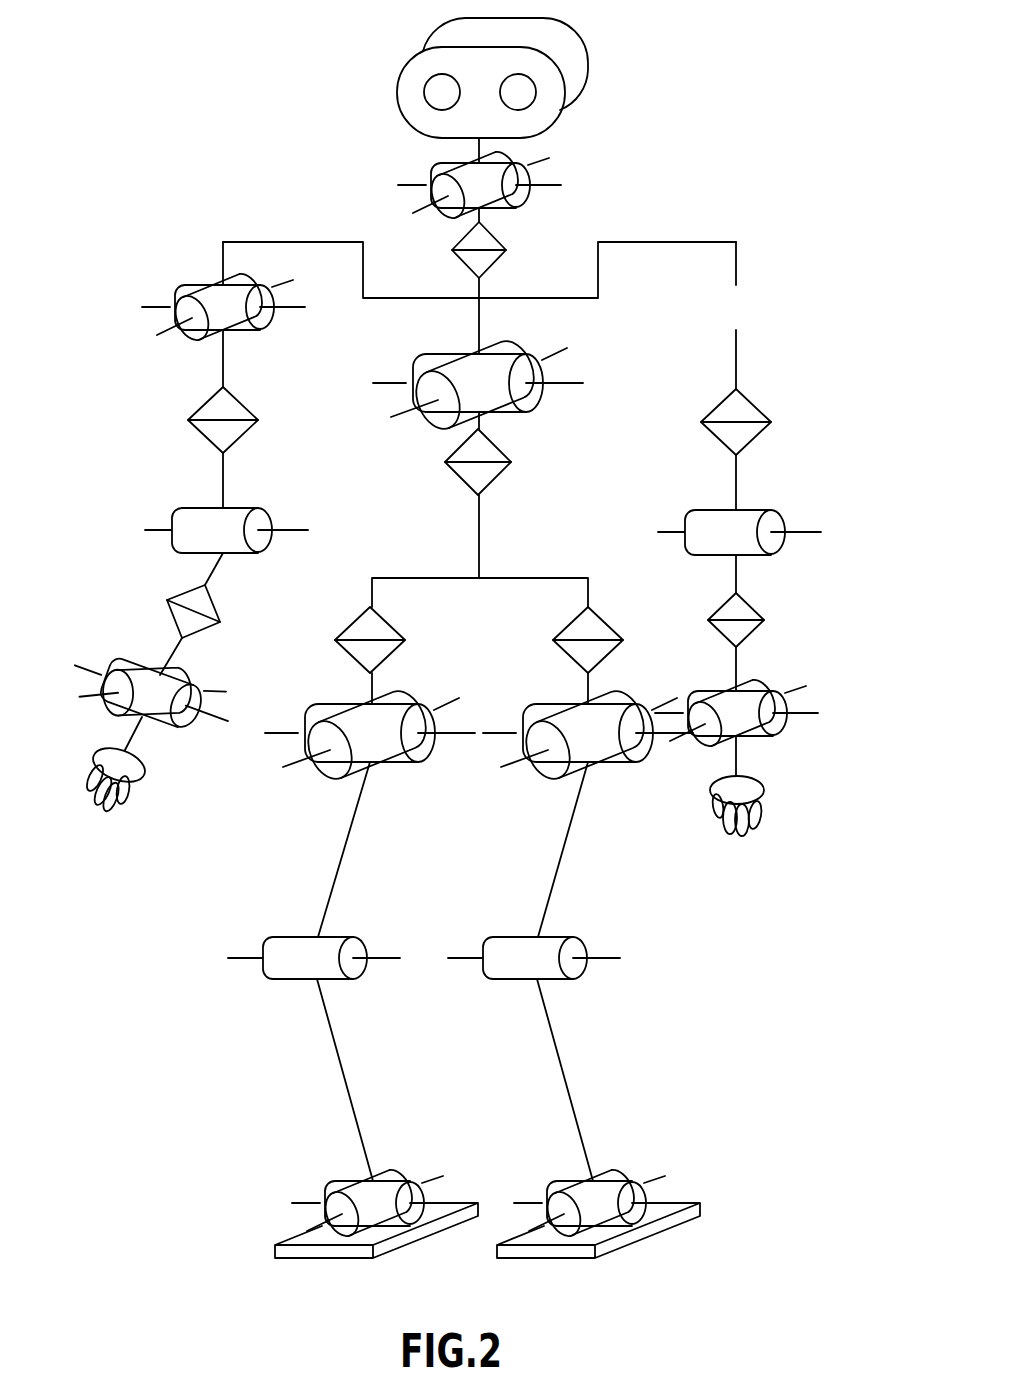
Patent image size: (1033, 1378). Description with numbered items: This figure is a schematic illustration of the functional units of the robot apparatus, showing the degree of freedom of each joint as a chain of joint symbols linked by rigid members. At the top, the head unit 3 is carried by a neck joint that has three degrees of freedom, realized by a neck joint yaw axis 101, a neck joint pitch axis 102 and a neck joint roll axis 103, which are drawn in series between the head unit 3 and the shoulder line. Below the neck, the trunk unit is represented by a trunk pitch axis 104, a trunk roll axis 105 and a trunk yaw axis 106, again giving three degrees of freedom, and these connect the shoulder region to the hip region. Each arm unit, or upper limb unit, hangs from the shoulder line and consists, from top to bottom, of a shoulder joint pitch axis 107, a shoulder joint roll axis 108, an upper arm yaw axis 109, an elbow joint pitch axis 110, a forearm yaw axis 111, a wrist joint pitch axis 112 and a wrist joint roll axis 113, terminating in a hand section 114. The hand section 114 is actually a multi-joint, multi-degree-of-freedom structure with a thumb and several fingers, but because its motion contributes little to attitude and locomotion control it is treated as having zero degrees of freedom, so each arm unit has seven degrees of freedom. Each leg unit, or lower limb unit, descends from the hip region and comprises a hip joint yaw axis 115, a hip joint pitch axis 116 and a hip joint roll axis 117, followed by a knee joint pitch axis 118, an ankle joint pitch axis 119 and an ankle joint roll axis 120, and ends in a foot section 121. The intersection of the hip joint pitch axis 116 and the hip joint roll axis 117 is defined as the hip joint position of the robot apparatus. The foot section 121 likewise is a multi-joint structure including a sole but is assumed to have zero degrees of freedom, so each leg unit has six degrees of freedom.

The head unit 3 is at (545, 38).
The neck joint yaw axis 101 is at (507, 250).
The neck joint pitch axis 102 is at (525, 177).
The neck joint roll axis 103 is at (505, 155).
The trunk pitch axis 104 is at (545, 383).
The trunk roll axis 105 is at (540, 352).
The trunk yaw axis 106 is at (513, 462).
The shoulder joint pitch axis 107 is at (185, 285).
The shoulder joint roll axis 108 is at (180, 322).
The upper arm yaw axis 109 is at (190, 420).
The elbow joint pitch axis 110 is at (177, 515).
The forearm yaw axis 111 is at (165, 600).
The wrist joint pitch axis 112 is at (110, 665).
The wrist joint roll axis 113 is at (123, 705).
The hand section 114 is at (105, 760).
The hip joint yaw axis 115 is at (625, 641).
The hip joint pitch axis 116 is at (652, 762).
The hip joint roll axis 117 is at (551, 772).
The knee joint pitch axis 118 is at (575, 968).
The ankle joint pitch axis 119 is at (632, 1197).
The ankle joint roll axis 120 is at (627, 1172).
The foot section 121 is at (305, 1234).